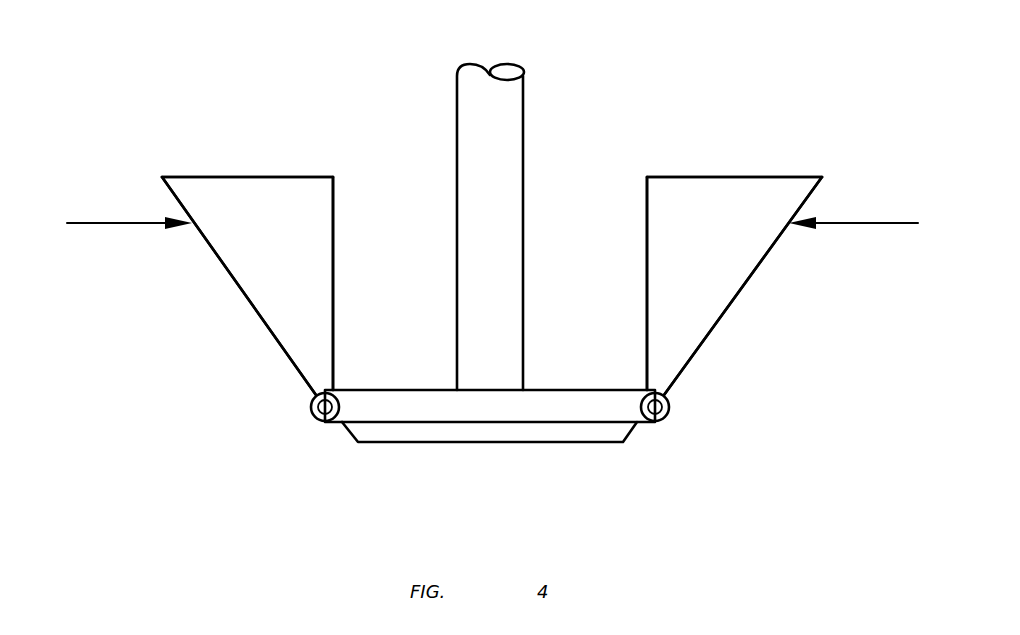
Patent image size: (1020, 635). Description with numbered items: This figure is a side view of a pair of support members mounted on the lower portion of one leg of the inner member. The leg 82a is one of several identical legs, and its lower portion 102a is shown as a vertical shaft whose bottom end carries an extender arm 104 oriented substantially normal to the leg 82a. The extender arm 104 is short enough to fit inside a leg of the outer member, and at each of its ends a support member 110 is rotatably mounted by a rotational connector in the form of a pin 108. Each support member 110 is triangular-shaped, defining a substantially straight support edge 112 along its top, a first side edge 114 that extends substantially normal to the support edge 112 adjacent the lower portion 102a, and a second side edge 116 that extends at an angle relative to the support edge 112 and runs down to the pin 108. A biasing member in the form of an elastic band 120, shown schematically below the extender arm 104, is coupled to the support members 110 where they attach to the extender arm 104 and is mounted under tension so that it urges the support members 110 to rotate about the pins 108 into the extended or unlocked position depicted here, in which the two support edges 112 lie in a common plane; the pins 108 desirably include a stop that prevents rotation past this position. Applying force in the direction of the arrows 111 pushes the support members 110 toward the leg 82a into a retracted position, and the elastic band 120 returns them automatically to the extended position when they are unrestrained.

The leg 82a is at (702, 58).
The lower portion 102a is at (500, 112).
The extender arm 104 is at (493, 408).
The pins 108 is at (323, 412).
The support members 110 is at (248, 230).
The arrows 111 is at (108, 205).
The support edge 112 is at (243, 177).
The first side edge 114 is at (333, 225).
The second side edge 116 is at (230, 280).
The elastic band 120 is at (445, 442).